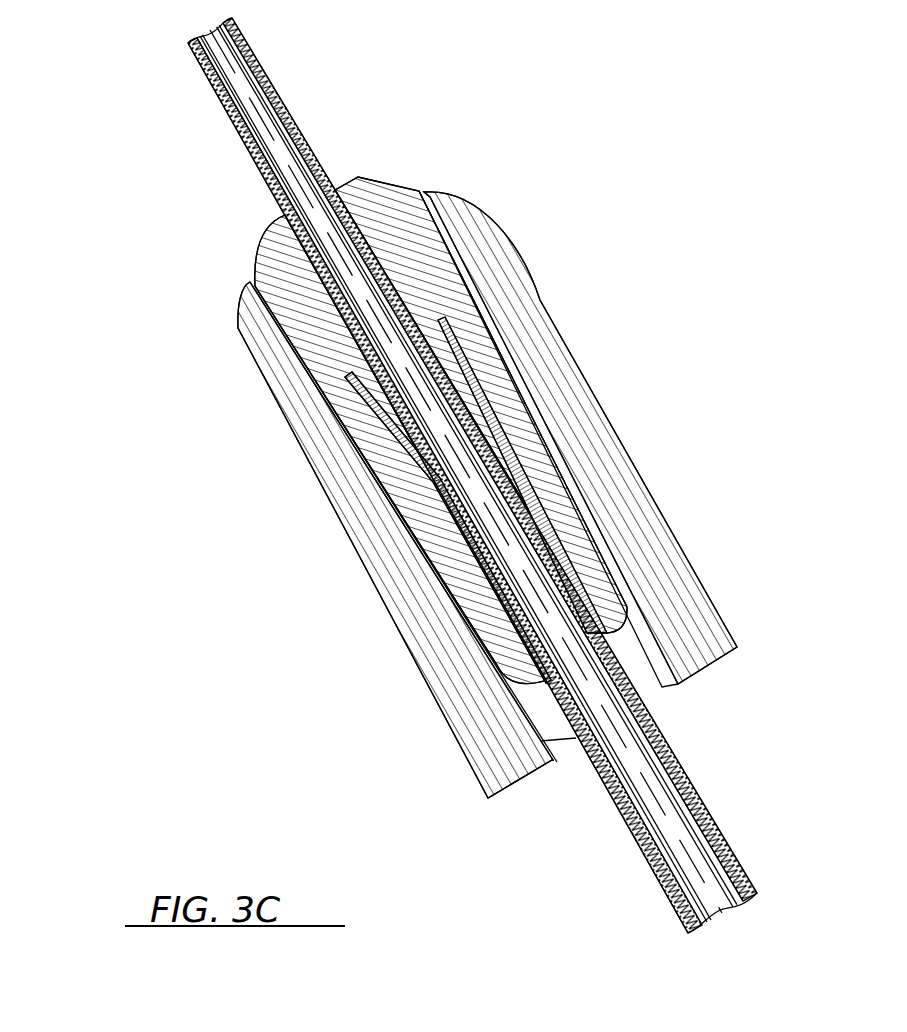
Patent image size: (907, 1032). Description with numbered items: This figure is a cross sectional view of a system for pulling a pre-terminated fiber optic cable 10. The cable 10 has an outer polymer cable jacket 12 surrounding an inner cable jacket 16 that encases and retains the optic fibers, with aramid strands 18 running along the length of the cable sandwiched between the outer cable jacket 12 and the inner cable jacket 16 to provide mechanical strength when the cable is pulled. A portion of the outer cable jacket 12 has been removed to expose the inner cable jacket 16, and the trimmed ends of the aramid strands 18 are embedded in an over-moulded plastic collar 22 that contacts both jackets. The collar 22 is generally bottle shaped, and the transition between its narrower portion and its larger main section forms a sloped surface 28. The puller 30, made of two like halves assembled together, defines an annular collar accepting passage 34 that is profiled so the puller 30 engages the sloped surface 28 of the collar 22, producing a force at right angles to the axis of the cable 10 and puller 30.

The fiber optic cable 10 is at (538, 475).
The outer cable jacket 12 is at (680, 770).
The inner cable jacket 16 is at (296, 135).
The aramid strands 18 is at (463, 371).
The collar 22 is at (513, 424).
The sloped surface 28 is at (333, 556).
The puller 30 is at (505, 275).
The collar accepting passage 34 is at (313, 386).